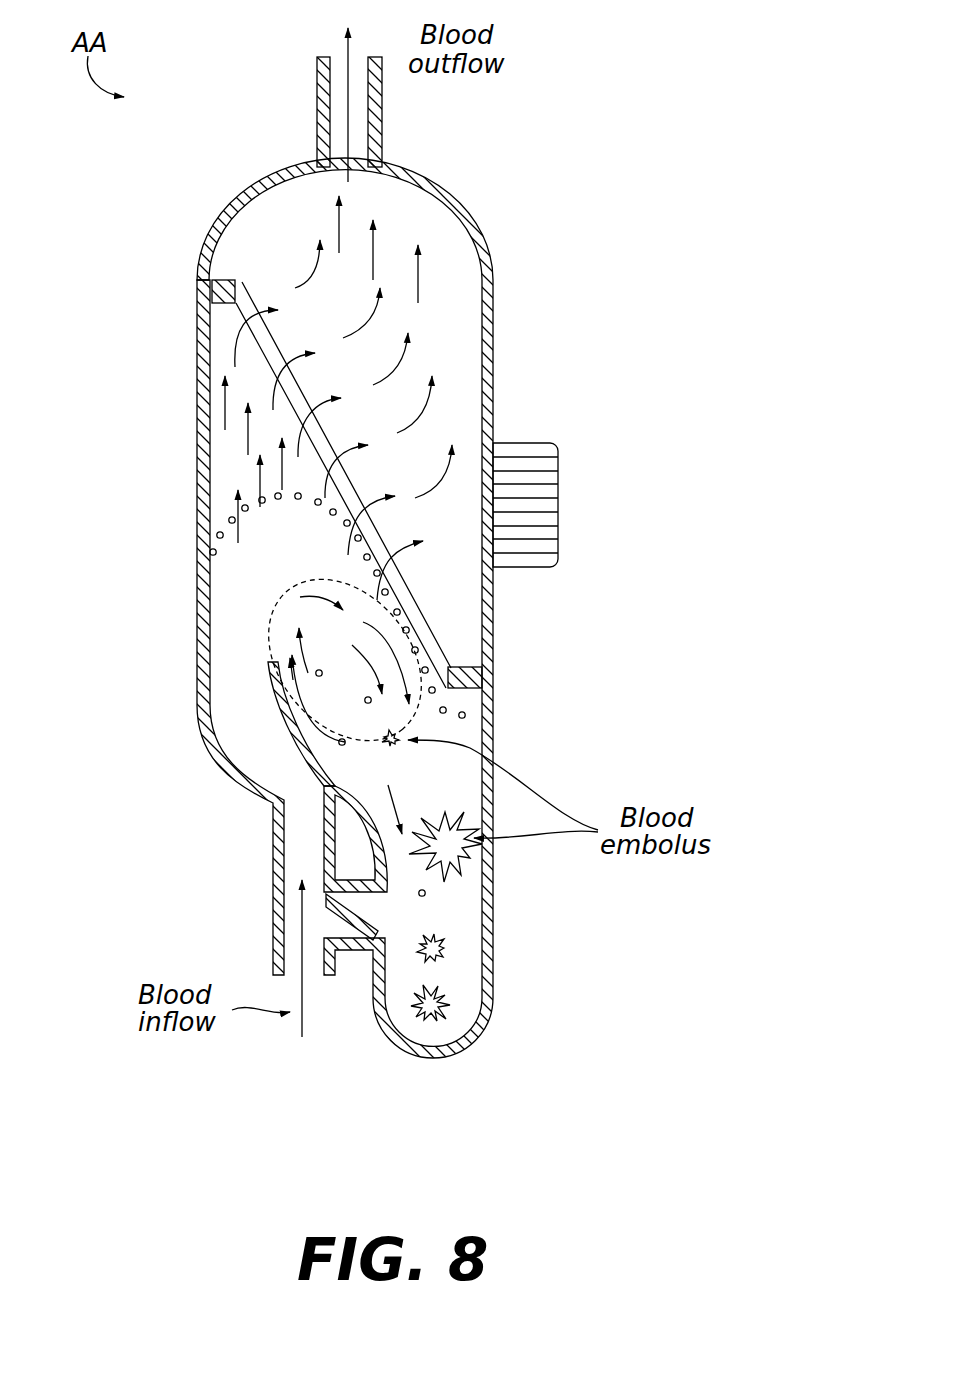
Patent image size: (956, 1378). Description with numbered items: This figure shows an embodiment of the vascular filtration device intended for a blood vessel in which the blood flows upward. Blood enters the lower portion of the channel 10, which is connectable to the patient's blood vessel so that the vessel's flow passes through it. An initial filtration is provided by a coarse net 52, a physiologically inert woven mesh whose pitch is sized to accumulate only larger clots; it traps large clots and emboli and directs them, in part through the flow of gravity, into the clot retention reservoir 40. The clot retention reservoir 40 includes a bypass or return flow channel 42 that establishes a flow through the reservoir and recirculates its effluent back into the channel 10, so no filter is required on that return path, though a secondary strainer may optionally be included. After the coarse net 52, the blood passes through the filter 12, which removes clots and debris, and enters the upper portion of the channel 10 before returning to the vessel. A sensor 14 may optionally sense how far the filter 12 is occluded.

The channel 10 is at (512, 254).
The filter 12 is at (250, 353).
The sensor 14 is at (563, 504).
The clot retention reservoir 40 is at (518, 1009).
The bypass or return flow channel 42 is at (343, 877).
The coarse net 52 is at (253, 497).